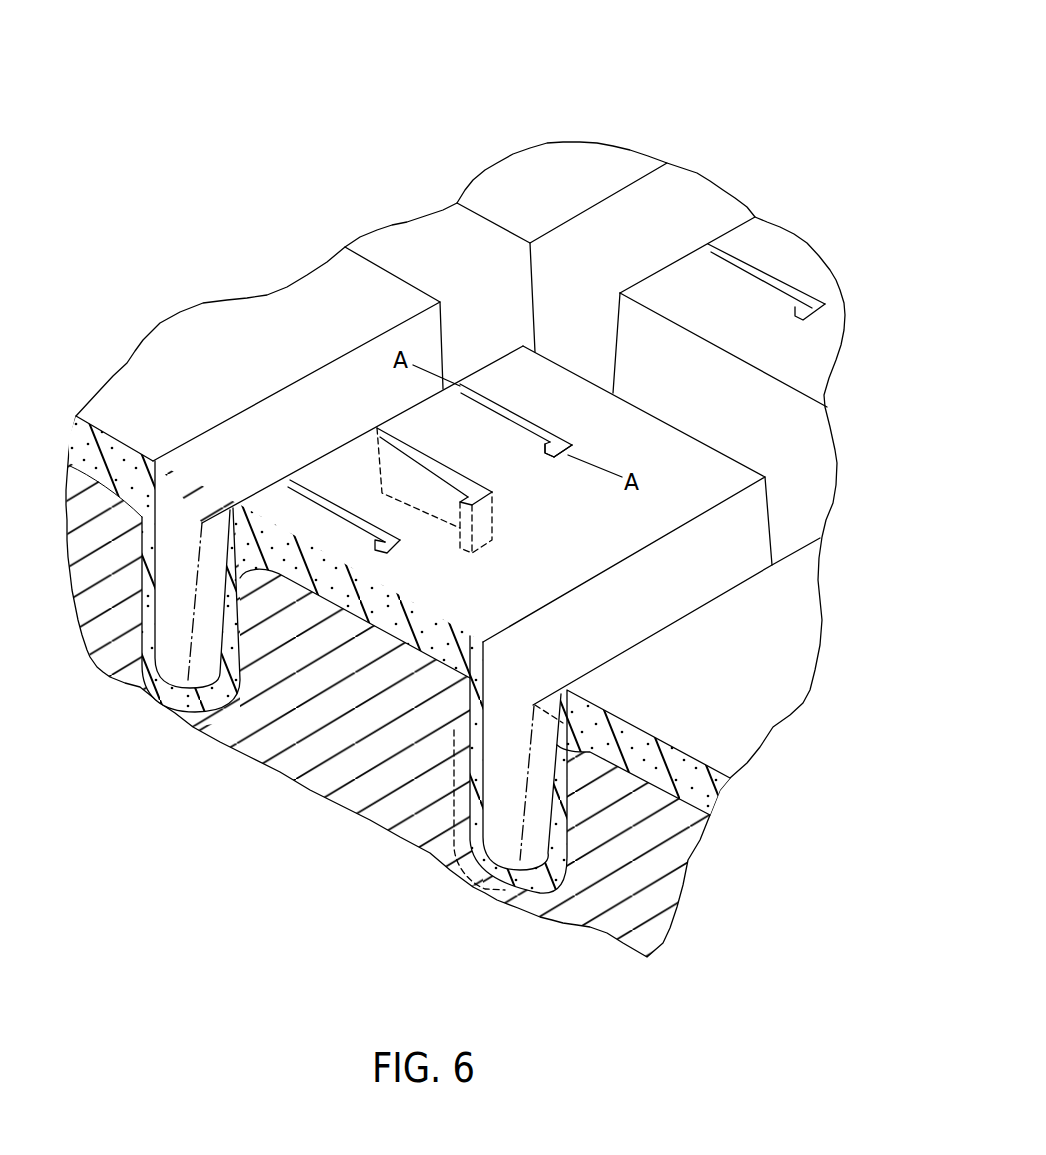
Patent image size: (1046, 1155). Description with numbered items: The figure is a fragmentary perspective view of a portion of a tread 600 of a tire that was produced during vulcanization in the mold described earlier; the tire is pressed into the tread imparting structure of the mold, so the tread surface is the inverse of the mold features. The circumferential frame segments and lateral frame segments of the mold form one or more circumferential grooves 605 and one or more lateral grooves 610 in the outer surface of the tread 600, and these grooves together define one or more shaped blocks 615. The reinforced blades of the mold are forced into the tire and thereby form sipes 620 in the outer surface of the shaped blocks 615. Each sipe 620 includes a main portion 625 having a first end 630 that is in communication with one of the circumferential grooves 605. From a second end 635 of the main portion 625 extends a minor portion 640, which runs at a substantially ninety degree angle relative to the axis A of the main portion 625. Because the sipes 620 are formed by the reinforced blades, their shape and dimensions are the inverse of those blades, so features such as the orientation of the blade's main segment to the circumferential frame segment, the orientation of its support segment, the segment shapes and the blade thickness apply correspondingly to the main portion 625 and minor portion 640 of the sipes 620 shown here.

The tread 600 is at (648, 90).
The circumferential groove 605 is at (235, 458).
The lateral groove 610 is at (452, 262).
The shaped block 615 is at (577, 541).
The sipe 620 is at (515, 400).
The main portion 625 is at (508, 420).
The first end 630 is at (463, 378).
The second end 635 is at (582, 438).
The minor portion 640 is at (573, 455).